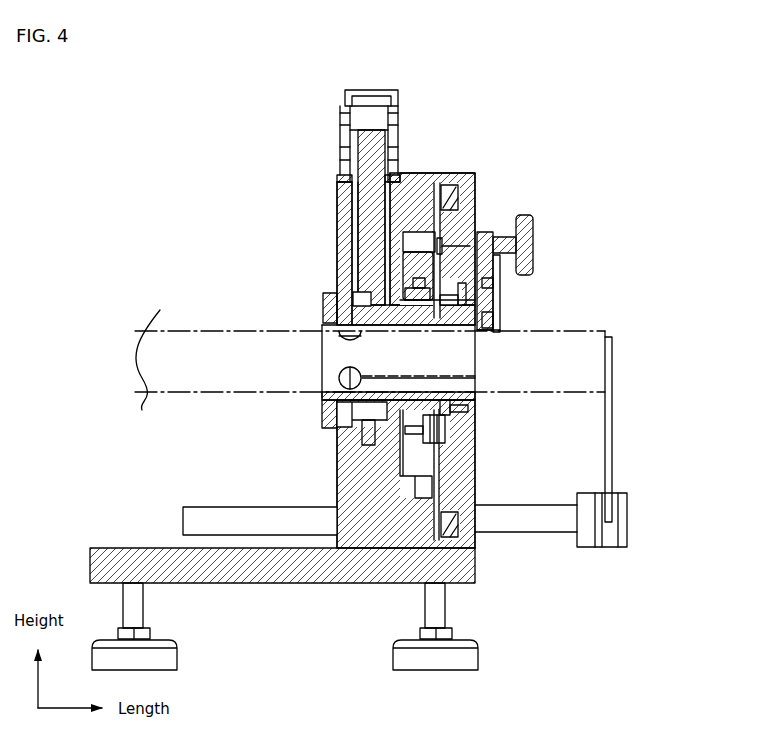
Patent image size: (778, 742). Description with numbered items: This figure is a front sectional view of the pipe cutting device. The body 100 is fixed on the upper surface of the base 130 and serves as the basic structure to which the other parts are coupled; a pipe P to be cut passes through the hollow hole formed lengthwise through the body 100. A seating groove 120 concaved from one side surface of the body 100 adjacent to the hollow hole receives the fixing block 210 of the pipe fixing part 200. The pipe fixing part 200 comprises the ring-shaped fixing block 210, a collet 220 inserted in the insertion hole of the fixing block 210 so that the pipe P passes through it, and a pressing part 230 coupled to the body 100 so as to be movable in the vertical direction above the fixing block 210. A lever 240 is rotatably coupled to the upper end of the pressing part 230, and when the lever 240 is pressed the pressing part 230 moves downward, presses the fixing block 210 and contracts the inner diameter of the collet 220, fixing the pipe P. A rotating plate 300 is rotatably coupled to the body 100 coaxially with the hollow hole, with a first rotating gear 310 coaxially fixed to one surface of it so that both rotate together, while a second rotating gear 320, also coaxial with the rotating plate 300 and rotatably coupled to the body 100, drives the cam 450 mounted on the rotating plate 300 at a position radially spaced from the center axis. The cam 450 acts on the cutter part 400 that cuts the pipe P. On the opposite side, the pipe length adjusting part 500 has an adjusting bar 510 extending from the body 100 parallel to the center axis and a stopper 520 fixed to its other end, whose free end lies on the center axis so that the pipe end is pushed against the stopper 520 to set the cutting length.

The body 100 is at (337, 238).
The seating groove 120 is at (343, 437).
The base 130 is at (294, 576).
The pipe fixing part 200 is at (318, 412).
The fixing block 210 is at (337, 297).
The collet 220 is at (322, 318).
The pressing part 230 is at (347, 168).
The lever 240 is at (347, 97).
The rotating plate 300 is at (480, 205).
The first rotating gear 310 is at (447, 193).
The second rotating gear 320 is at (412, 258).
The cutter part 400 is at (506, 290).
The cam 450 is at (483, 232).
The pipe length adjusting part 500 is at (614, 439).
The adjusting bar 510 is at (542, 513).
The stopper 520 is at (612, 403).
The pipe P is at (172, 333).